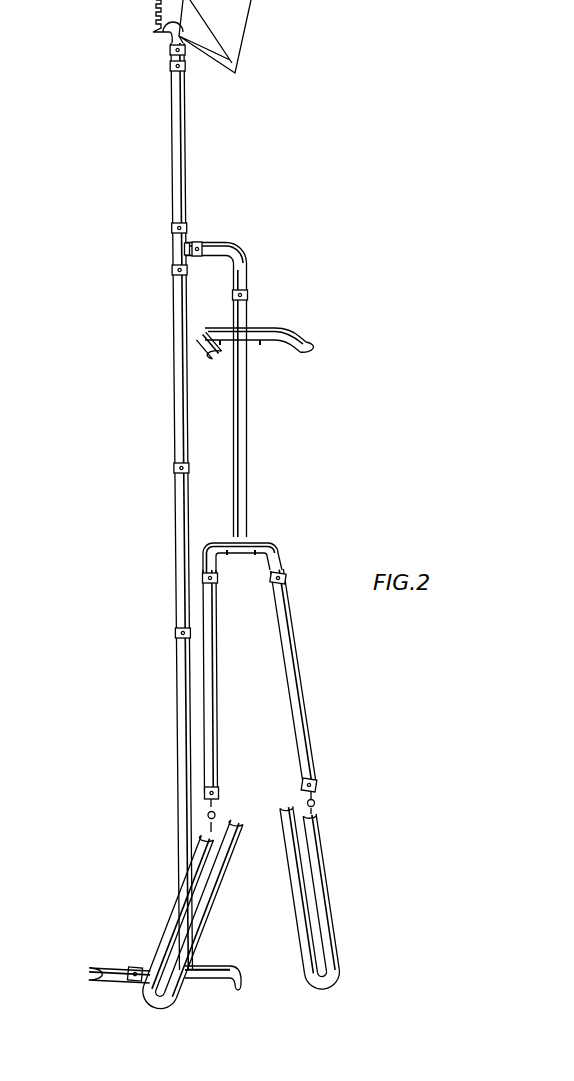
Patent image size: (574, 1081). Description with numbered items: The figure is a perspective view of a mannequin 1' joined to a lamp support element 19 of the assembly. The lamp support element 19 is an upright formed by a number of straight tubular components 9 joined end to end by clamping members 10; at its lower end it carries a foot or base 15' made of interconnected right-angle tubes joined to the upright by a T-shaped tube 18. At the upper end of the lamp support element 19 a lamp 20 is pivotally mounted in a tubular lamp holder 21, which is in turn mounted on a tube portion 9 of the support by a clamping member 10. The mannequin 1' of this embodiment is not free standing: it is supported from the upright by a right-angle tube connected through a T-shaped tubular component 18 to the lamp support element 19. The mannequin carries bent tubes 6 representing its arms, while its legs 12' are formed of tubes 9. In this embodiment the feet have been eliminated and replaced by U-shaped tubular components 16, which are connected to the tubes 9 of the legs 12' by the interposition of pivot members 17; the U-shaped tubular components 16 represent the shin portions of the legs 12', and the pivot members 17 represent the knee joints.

The mannequin 1' is at (292, 403).
The tube with 90° bend 6 is at (310, 328).
The straight tubular component 9 is at (184, 131).
The clamping member 10 is at (170, 67).
The leg 12' is at (245, 700).
The foot or base 15' is at (158, 942).
The U-shaped tubular component 16 is at (331, 906).
The pivot member 17 is at (318, 803).
The T-shaped tubular component 18 is at (178, 243).
The lamp support element 19 is at (131, 96).
The lamp 20 is at (250, 12).
The tubular lamp holder 21 is at (169, 55).